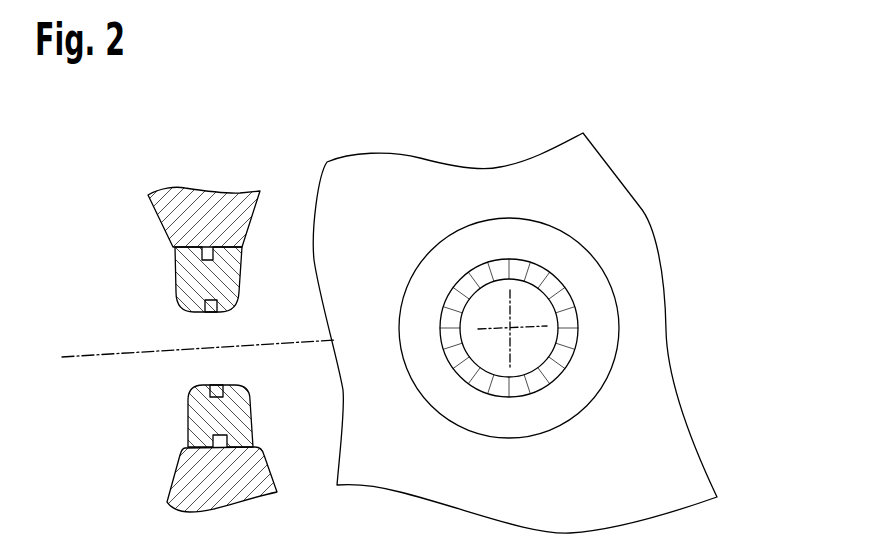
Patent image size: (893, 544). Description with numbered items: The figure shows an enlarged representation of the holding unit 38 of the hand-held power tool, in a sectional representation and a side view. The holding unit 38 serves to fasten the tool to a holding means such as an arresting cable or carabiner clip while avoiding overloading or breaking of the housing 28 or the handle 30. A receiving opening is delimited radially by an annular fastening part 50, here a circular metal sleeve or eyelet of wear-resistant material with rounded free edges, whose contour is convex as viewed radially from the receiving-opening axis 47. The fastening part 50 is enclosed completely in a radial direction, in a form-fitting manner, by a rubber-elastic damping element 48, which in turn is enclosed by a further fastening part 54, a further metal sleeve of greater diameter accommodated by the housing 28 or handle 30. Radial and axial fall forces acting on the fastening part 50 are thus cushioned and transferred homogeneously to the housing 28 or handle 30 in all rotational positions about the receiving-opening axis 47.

The housing 28 is at (432, 311).
The handle 30 is at (203, 197).
The holding unit 38 is at (560, 107).
The receiving-opening axis 47 is at (510, 327).
The damping element 48 is at (587, 270).
The fastening part 50 is at (572, 340).
The further fastening part 54 is at (583, 240).